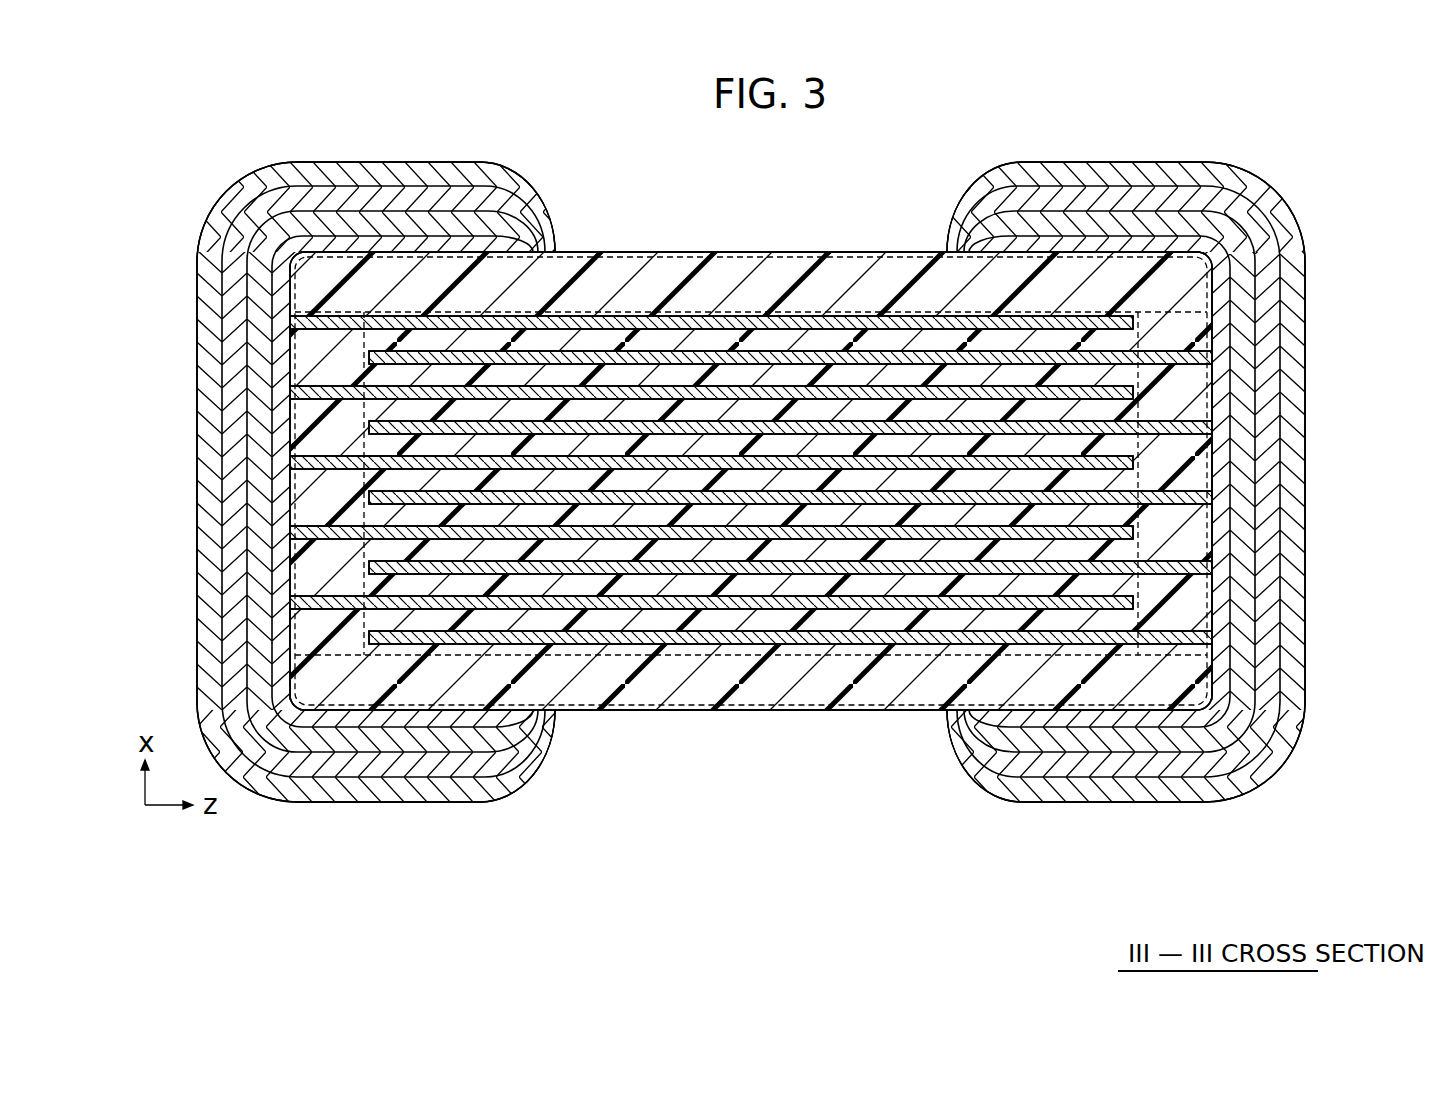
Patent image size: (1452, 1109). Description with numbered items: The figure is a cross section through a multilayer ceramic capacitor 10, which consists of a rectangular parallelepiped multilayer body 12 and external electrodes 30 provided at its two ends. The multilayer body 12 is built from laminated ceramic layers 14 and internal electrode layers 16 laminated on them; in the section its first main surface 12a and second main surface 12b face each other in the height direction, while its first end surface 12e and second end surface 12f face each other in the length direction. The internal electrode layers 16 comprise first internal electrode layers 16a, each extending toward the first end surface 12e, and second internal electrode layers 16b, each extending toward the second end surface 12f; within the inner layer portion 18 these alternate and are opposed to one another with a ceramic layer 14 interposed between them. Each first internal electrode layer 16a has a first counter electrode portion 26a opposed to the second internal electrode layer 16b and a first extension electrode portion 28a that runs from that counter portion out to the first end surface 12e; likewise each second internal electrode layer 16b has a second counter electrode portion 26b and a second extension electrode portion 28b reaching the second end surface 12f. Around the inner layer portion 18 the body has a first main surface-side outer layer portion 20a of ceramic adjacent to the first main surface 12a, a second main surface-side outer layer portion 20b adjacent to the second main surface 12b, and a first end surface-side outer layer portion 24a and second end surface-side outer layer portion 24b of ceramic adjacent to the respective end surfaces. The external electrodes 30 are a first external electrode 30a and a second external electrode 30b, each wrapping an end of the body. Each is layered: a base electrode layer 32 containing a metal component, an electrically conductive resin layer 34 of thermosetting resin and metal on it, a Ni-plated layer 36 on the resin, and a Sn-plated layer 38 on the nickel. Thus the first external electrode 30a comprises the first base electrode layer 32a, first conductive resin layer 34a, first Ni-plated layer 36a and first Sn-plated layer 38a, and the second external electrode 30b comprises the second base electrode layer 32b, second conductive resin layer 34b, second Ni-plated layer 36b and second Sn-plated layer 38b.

The multilayer ceramic capacitor 10 is at (262, 146).
The multilayer body 12 is at (756, 537).
The first main surface 12a is at (898, 250).
The second main surface 12b is at (641, 712).
The first end surface 12e is at (288, 438).
The second end surface 12f is at (1216, 468).
The ceramic layer 14 is at (810, 420).
The internal electrode layer 16 is at (751, 568).
The first internal electrode layer 16a is at (575, 468).
The second internal electrode layer 16b is at (630, 438).
The inner layer portion 18 is at (352, 618).
The first main surface-side outer layer portion 20a is at (922, 250).
The second main surface-side outer layer portion 20b is at (928, 697).
The first end surface-side outer layer portion 24a is at (305, 504).
The second end surface-side outer layer portion 24b is at (1190, 498).
The first counter electrode portion 26a is at (700, 468).
The second counter electrode portion 26b is at (760, 432).
The first extension electrode portion 28a is at (305, 462).
The second extension electrode portion 28b is at (1200, 427).
The external electrode 30 is at (751, 547).
The first external electrode 30a is at (133, 203).
The second external electrode 30b is at (1370, 230).
The base electrode layer 32 is at (652, 857).
The first base electrode layer 32a is at (286, 252).
The second base electrode layer 32b is at (1216, 255).
The electrically conductive resin layer 34 is at (774, 857).
The first conductive resin layer 34a is at (258, 262).
The second conductive resin layer 34b is at (1245, 290).
The Ni-plated layer 36 is at (896, 857).
The first Ni-plated layer 36a is at (236, 297).
The second Ni-plated layer 36b is at (1268, 322).
The Sn-plated layer 38 is at (1018, 857).
The first Sn-plated layer 38a is at (213, 335).
The second Sn-plated layer 38b is at (1290, 358).